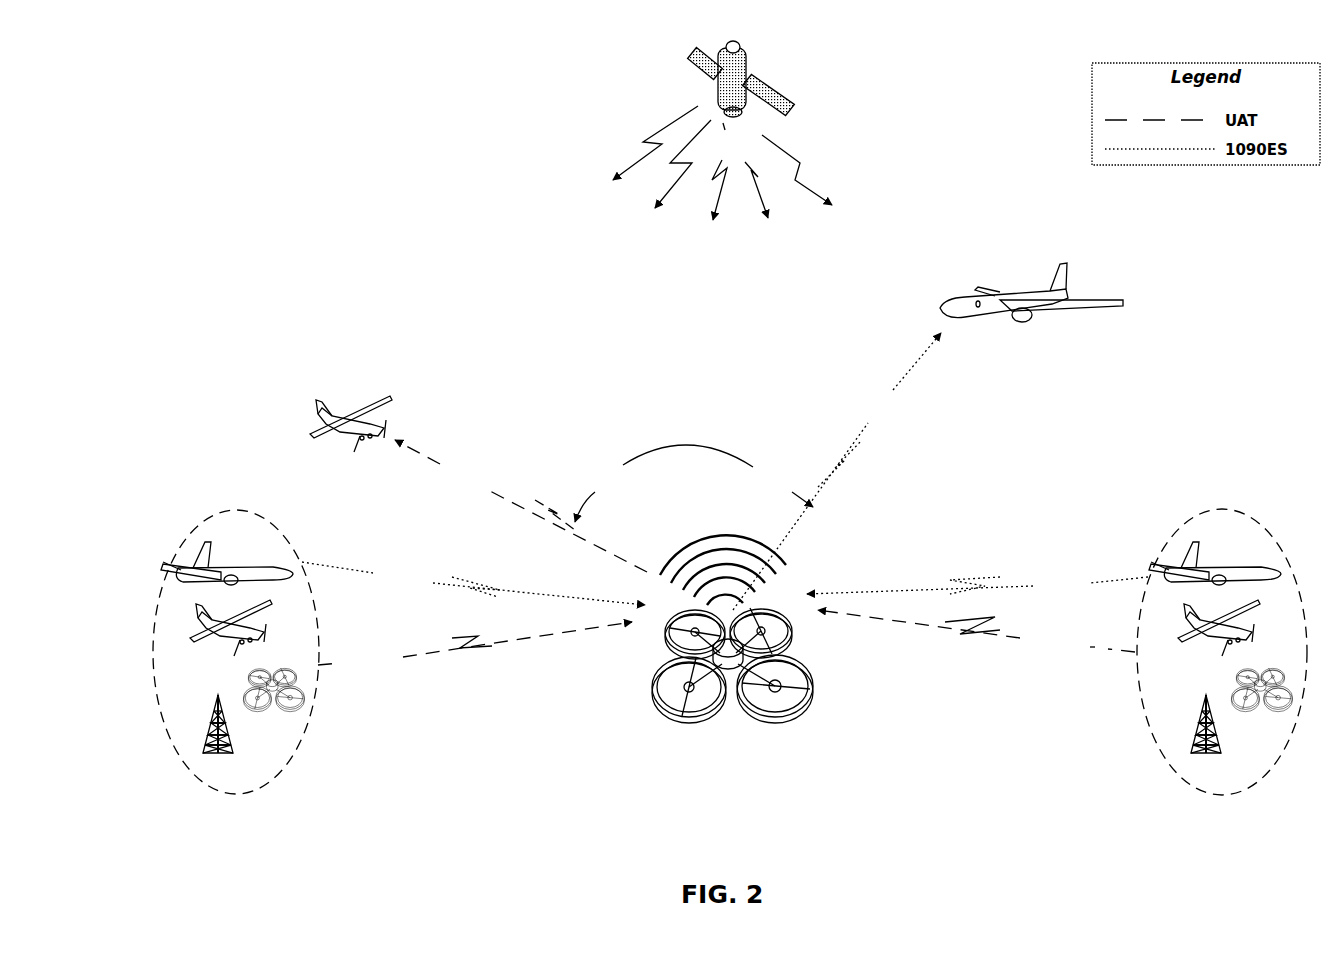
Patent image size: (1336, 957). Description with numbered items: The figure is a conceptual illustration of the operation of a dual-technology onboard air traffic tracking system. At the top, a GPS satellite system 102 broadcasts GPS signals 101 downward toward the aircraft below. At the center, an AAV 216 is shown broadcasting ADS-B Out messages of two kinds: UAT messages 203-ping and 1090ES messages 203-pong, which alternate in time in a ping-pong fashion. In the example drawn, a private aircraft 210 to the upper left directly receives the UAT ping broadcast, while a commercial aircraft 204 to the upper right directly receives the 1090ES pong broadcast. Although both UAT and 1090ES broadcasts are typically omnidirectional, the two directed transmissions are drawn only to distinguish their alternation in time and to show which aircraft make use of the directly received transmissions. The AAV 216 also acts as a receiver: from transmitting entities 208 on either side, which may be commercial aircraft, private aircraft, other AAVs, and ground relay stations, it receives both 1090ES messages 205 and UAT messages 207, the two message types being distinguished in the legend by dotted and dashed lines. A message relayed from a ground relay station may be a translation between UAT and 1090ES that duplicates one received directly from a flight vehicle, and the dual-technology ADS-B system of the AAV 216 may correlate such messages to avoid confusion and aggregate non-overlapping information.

The GPS signals 101 is at (722, 163).
The GPS satellite system 102 is at (741, 67).
The UAT and 1090ES messages (ping and pong) 203 is at (668, 471).
The commercial aircraft 204 is at (1031, 317).
The 1090ES messages 205 is at (725, 583).
The UAT messages 207 is at (726, 638).
The transmitting entities 208 is at (730, 652).
The private aircraft 210 is at (313, 438).
The AAV 216 is at (722, 722).